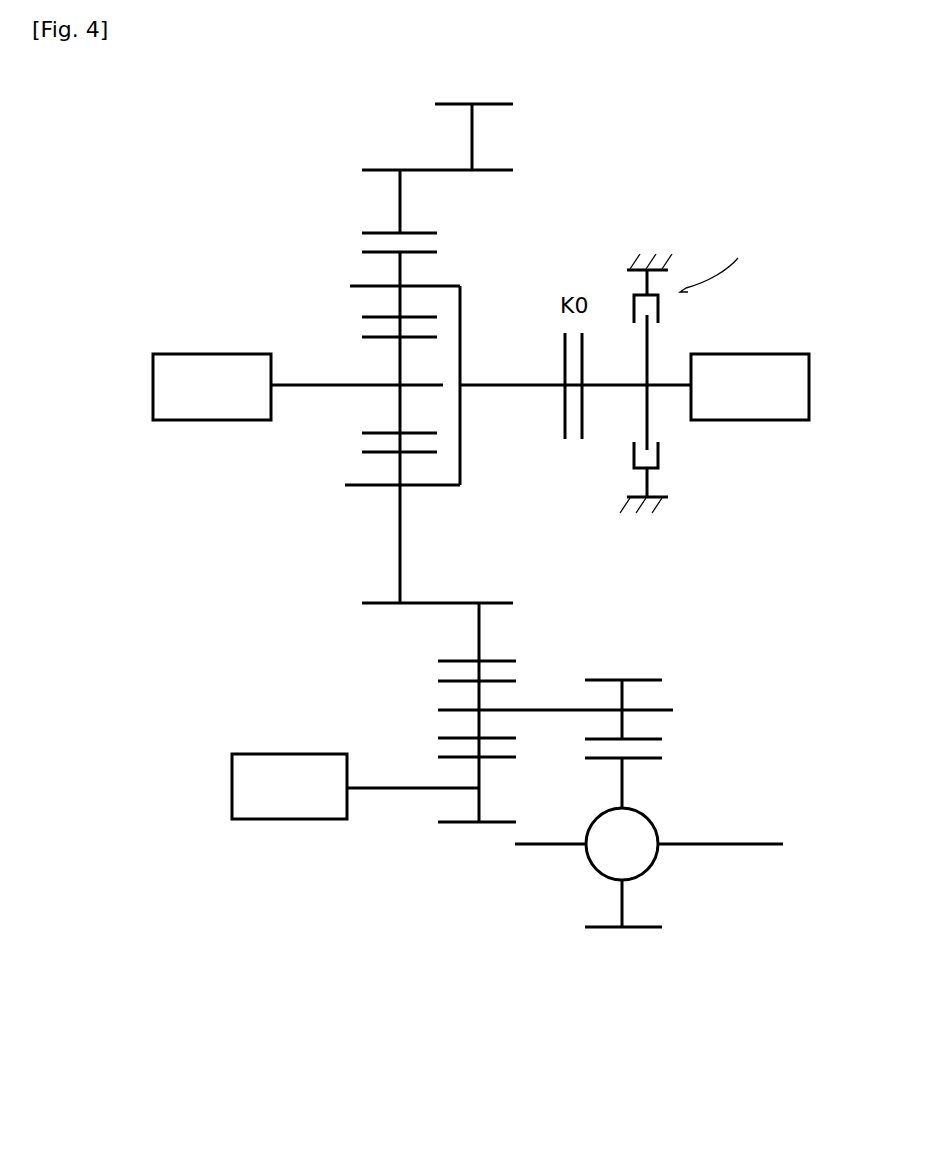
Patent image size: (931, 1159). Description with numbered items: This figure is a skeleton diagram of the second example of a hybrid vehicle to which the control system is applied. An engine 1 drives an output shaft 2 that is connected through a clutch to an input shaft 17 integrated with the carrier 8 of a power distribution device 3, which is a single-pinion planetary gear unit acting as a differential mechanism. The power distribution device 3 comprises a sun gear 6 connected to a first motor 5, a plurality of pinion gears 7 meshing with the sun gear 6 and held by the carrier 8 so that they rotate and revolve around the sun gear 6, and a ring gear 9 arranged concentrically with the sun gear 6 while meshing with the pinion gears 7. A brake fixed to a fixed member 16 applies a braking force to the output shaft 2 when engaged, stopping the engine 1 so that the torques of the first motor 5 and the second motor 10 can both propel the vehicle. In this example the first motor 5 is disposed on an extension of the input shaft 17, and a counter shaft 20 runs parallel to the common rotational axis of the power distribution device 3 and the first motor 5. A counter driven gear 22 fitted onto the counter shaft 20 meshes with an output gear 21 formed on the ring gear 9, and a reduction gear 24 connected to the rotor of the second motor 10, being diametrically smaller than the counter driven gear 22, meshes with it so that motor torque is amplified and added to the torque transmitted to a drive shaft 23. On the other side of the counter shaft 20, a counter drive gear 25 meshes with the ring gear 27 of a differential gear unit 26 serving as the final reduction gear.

The engine 1 is at (748, 354).
The output shaft 2 is at (601, 390).
The power distribution device 3 is at (326, 244).
The first motor 5 is at (224, 354).
The sun gear 6 is at (418, 338).
The pinion gear 7 is at (437, 252).
The carrier 8 is at (462, 307).
The ring gear 9 is at (428, 232).
The second motor 10 is at (278, 820).
The fixed member 16 is at (646, 255).
The input shaft 17 is at (518, 390).
The counter shaft 20 is at (561, 710).
The output gear 21 is at (473, 132).
The counter driven gear 22 is at (442, 681).
The drive shaft 23 is at (746, 843).
The reduction gear 24 is at (458, 824).
The counter drive gear 25 is at (645, 675).
The differential gear unit 26 is at (678, 790).
The ring gear 27 is at (600, 930).